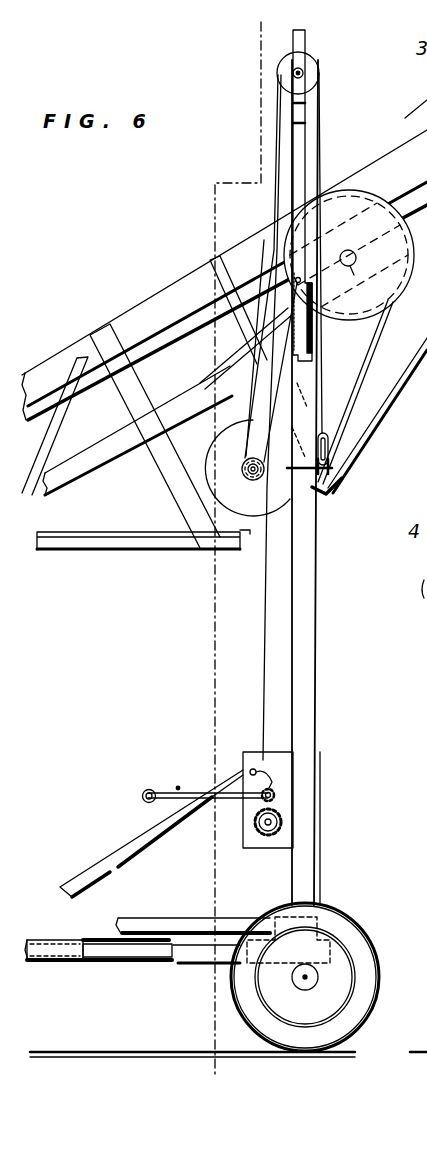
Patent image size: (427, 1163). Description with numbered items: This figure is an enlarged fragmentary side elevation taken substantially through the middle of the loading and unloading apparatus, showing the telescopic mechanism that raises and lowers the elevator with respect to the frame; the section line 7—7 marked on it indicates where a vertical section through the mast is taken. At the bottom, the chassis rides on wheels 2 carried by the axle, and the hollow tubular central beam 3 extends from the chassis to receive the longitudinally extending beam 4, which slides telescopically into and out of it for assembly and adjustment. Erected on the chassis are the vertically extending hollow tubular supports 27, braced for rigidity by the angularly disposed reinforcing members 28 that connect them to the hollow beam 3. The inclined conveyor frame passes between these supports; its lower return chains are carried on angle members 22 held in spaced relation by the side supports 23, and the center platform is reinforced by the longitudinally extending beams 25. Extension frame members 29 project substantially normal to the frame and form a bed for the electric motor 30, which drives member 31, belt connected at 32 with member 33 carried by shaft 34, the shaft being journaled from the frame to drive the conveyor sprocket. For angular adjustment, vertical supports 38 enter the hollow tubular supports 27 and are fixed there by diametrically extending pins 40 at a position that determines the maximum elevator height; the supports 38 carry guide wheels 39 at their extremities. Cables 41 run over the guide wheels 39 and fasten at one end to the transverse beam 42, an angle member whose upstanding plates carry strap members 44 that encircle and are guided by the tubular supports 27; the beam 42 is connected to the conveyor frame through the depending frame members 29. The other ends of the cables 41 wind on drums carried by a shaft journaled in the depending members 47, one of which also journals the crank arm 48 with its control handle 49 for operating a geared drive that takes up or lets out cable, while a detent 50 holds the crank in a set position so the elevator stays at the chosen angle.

The wheels 2 is at (303, 1045).
The central beam 3 is at (200, 963).
The longitudinally extending beam 4 is at (46, 960).
The section line 7- 7 is at (256, 42).
The angle members 22 is at (93, 458).
The side supports 23 is at (383, 418).
The longitudinally extending beams 25 is at (167, 338).
The vertically extending hollow tubular supports 27 is at (310, 668).
The angularly disposed reinforcing members 28 is at (128, 848).
The extension frame members 29 is at (220, 283).
The electric motor 30 is at (216, 468).
The driven member 31 is at (205, 550).
The belt connection 32 is at (360, 358).
The belt-driven member 33 is at (357, 200).
The shaft 34 is at (352, 277).
The vertical supports 38 is at (294, 173).
The guide wheels 39 is at (304, 68).
The diametrically extending pins 40 is at (296, 279).
The cables 41 is at (256, 620).
The transverse beam 42 is at (322, 488).
The strap members 44 is at (334, 468).
The depending members 47 is at (286, 838).
The crank arm 48 is at (180, 786).
The control handle 49 is at (150, 789).
The detent 50 is at (276, 772).